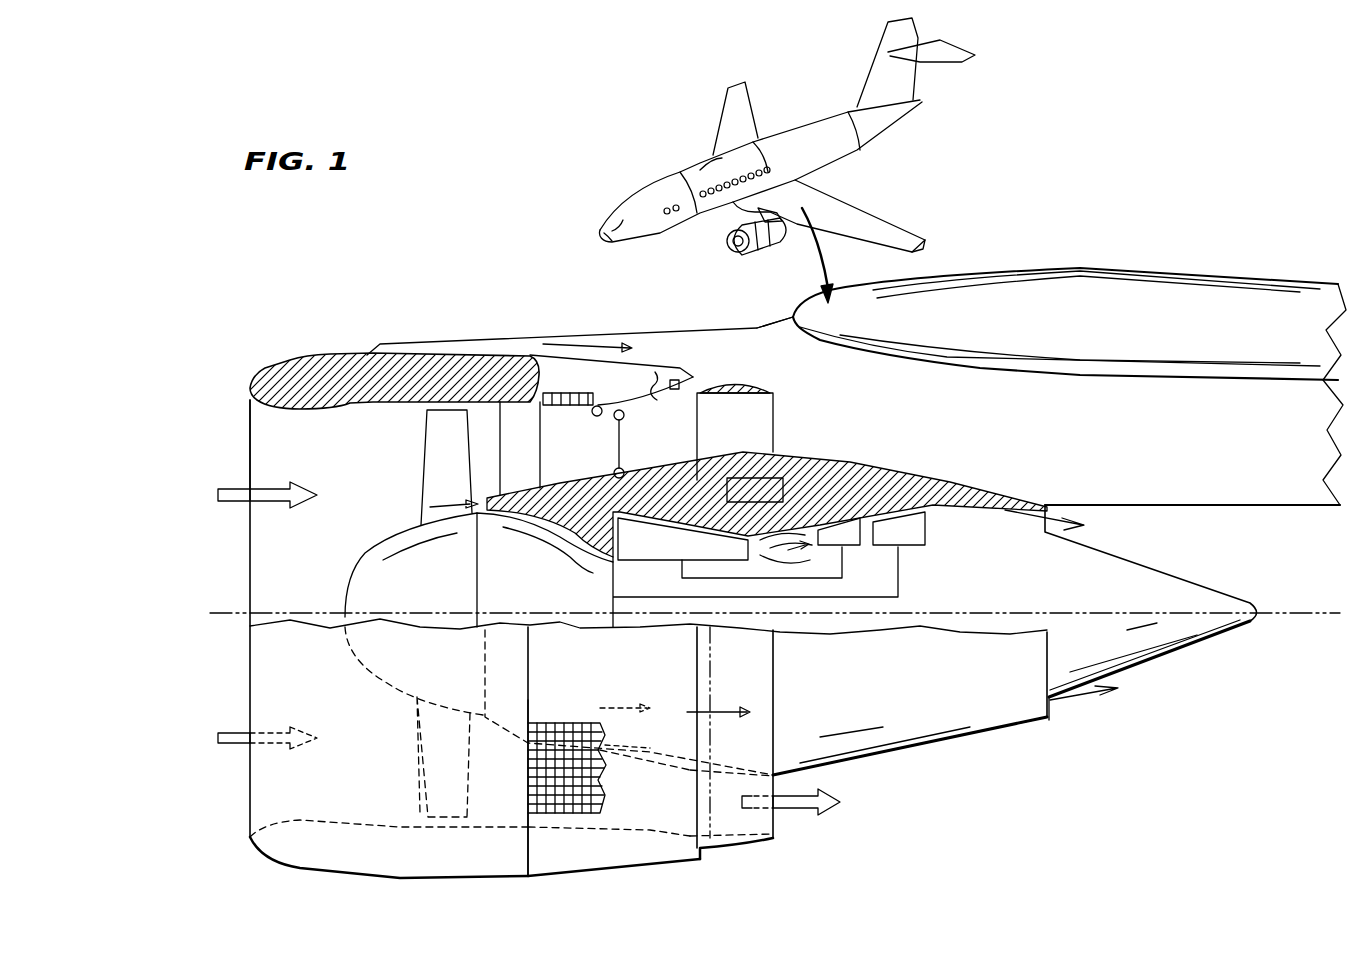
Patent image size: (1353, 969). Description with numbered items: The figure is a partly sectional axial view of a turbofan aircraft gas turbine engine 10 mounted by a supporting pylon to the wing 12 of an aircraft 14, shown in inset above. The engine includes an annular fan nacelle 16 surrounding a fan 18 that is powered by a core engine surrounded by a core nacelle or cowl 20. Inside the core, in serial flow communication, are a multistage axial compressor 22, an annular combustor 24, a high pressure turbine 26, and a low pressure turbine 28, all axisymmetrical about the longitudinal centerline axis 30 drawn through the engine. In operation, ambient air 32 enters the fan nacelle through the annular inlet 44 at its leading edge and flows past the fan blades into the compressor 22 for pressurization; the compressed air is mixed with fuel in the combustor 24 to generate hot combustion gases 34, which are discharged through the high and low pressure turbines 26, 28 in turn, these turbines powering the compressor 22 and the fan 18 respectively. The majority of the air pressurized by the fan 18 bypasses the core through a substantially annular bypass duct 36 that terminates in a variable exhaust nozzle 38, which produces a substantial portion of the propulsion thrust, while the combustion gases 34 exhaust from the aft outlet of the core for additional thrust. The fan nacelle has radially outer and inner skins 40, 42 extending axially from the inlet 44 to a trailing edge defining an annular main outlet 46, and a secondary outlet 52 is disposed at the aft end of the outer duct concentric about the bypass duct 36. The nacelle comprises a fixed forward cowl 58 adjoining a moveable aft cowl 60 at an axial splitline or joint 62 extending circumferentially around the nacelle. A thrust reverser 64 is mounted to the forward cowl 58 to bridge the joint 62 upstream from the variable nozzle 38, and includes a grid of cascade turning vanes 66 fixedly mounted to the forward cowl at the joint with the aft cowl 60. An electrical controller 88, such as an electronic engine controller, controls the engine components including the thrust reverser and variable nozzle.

The turbofan aircraft gas turbine engine 10 is at (336, 316).
The wing 12 is at (1066, 326).
The aircraft 14 is at (822, 118).
The fan nacelle 16 is at (275, 858).
The fan 18 is at (427, 462).
The core nacelle or cowl 20 is at (787, 547).
The multistage axial compressor 22 is at (638, 548).
The annular combustor 24 is at (792, 558).
The high pressure turbine 26 is at (848, 547).
The low pressure turbine 28 is at (905, 548).
The longitudinal or axial centerline axis 30 is at (1300, 617).
The ambient air 32 is at (560, 339).
The hot combustion gases 34 is at (1067, 700).
The bypass duct 36 is at (681, 461).
The variable exhaust nozzle 38 is at (681, 350).
The outer cowling or skin 40 is at (442, 350).
The inner cowling or skin 42 is at (362, 405).
The annular inlet 44 is at (250, 447).
The annular main outlet 46 is at (773, 422).
The secondary outlet 52 is at (700, 850).
The forward cowl 58 is at (486, 867).
The aft cowl 60 is at (613, 864).
The axial splitline or joint 62 is at (530, 865).
The thrust reverser 64 is at (603, 426).
The grid of cascade turning vanes 66 is at (560, 745).
The electrical controller 88 is at (744, 490).